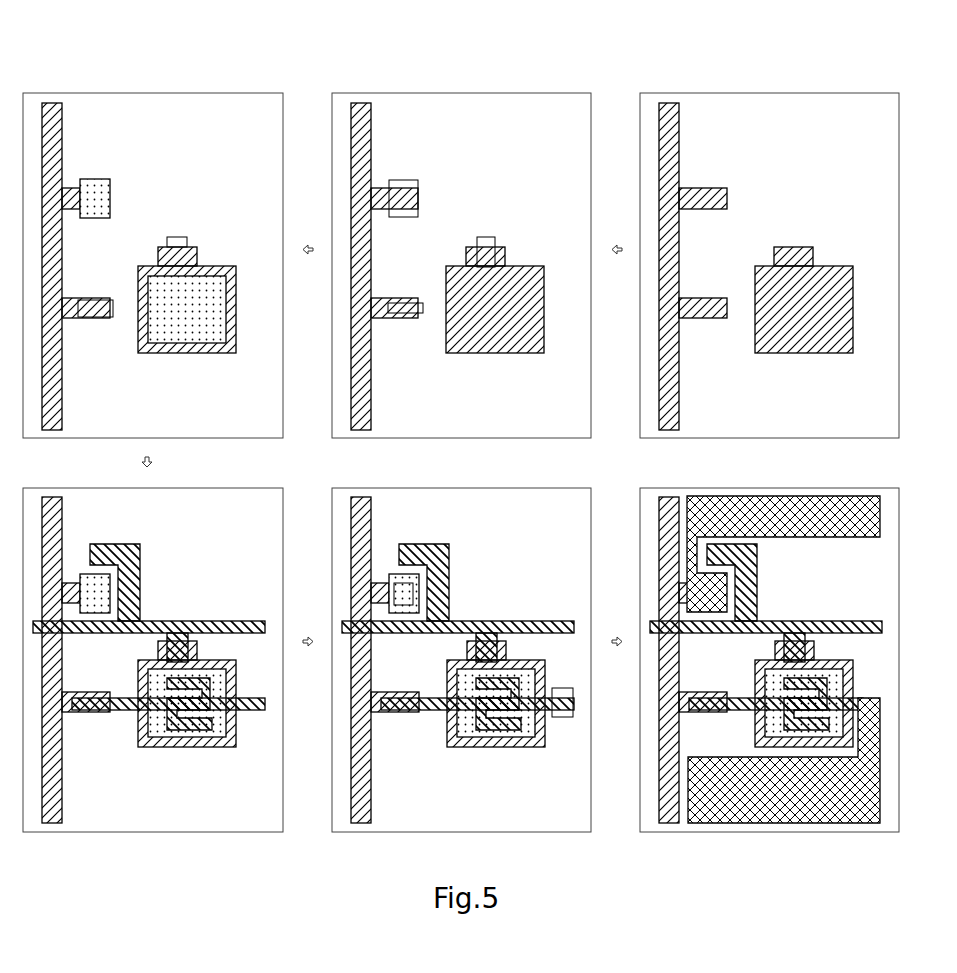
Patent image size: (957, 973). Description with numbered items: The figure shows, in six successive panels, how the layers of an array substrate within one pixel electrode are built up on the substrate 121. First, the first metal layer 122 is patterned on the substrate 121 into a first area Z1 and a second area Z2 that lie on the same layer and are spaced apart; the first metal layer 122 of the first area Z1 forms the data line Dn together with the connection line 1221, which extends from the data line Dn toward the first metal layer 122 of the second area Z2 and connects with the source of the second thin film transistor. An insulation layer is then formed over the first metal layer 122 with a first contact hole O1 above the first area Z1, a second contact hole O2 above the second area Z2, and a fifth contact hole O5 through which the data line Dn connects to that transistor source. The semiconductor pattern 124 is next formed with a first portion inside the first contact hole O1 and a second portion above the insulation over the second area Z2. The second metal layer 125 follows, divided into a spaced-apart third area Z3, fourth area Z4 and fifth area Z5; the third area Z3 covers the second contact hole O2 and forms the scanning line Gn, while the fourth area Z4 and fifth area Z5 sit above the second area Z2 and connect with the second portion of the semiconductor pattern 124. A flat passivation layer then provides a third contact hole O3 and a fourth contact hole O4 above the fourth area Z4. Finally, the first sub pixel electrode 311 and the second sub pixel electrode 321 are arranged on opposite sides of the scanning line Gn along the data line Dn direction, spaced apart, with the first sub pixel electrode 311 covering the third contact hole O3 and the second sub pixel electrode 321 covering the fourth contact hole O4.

The substrate 121 is at (770, 266).
The data line Dn is at (681, 266).
The first area Z1 is at (717, 176).
The second area Z2 is at (848, 255).
The first metal layer 122 is at (793, 252).
The connection line 1221 is at (703, 310).
The first contact hole O1 is at (404, 185).
The second contact hole O2 is at (487, 242).
The third contact hole O3 is at (402, 595).
The fourth contact hole O4 is at (560, 716).
The fifth contact hole O5 is at (403, 308).
The semiconductor pattern 124 is at (100, 200).
The second metal layer 125 is at (151, 668).
The third area Z3 is at (152, 596).
The fourth area Z4 is at (124, 723).
The fifth area Z5 is at (248, 684).
The scanning line Gn is at (149, 616).
The first sub pixel electrode 311 is at (805, 537).
The second sub pixel electrode 321 is at (746, 770).